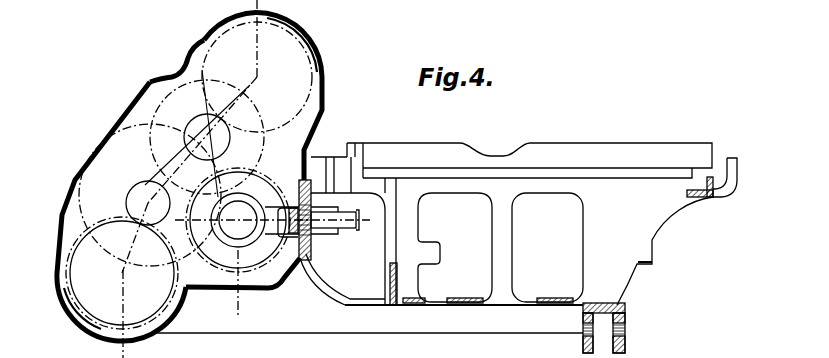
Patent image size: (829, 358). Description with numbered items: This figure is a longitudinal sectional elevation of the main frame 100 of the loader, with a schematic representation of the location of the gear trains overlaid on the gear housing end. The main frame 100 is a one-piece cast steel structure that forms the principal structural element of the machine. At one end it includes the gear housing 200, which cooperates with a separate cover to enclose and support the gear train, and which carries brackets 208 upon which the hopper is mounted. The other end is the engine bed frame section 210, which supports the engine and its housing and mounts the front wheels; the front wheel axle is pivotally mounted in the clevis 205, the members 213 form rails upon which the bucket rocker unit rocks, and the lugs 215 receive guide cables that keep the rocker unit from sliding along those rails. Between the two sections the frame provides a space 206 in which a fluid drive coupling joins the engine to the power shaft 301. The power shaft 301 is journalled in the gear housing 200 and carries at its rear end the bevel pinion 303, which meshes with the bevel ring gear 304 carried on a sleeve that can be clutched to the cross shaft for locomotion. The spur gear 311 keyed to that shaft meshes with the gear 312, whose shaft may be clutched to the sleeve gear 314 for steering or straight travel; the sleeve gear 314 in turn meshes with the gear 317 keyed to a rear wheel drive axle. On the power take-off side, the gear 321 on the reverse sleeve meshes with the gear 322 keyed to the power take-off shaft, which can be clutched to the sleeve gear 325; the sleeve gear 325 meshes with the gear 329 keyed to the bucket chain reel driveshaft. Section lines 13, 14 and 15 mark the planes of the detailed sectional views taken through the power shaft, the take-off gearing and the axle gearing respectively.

The section line 13- 13 is at (272, 2).
The section line 14- 14 is at (152, 70).
The section line 15- 15 is at (143, 353).
The main frame 100 is at (624, 145).
The gear housing 200 is at (326, 108).
The clevis 205 is at (627, 313).
The space 206 is at (353, 283).
The brackets 208 is at (58, 300).
The engine bed frame section 210 is at (402, 332).
The members forming rails 213 is at (554, 168).
The lugs 215 is at (733, 163).
The power shaft 301 is at (334, 230).
The bevel pinion 303 is at (280, 205).
The bevel ring gear 304 is at (248, 250).
The spur gear 311 is at (228, 244).
The gear 312 is at (106, 147).
The sleeve gear 314 is at (157, 180).
The gear 317 is at (63, 304).
The gear 321 is at (250, 252).
The gear 322 is at (157, 106).
The sleeve gear 325 is at (183, 130).
The gear 329 is at (303, 53).